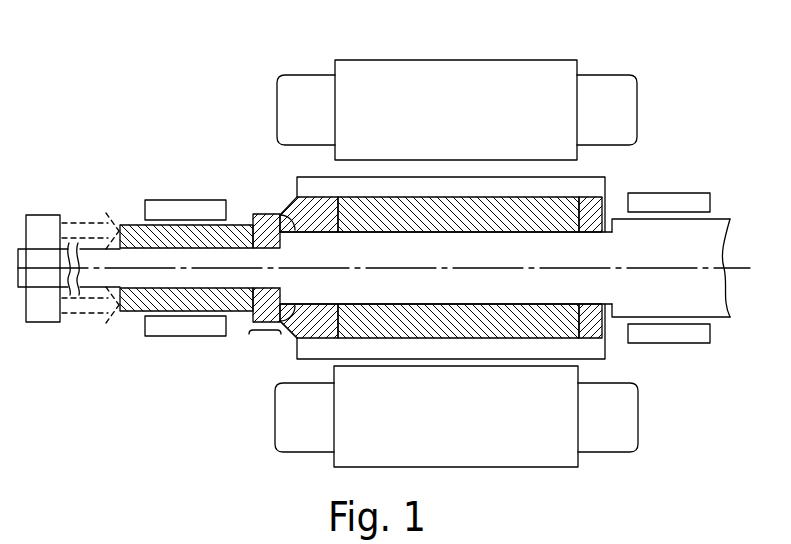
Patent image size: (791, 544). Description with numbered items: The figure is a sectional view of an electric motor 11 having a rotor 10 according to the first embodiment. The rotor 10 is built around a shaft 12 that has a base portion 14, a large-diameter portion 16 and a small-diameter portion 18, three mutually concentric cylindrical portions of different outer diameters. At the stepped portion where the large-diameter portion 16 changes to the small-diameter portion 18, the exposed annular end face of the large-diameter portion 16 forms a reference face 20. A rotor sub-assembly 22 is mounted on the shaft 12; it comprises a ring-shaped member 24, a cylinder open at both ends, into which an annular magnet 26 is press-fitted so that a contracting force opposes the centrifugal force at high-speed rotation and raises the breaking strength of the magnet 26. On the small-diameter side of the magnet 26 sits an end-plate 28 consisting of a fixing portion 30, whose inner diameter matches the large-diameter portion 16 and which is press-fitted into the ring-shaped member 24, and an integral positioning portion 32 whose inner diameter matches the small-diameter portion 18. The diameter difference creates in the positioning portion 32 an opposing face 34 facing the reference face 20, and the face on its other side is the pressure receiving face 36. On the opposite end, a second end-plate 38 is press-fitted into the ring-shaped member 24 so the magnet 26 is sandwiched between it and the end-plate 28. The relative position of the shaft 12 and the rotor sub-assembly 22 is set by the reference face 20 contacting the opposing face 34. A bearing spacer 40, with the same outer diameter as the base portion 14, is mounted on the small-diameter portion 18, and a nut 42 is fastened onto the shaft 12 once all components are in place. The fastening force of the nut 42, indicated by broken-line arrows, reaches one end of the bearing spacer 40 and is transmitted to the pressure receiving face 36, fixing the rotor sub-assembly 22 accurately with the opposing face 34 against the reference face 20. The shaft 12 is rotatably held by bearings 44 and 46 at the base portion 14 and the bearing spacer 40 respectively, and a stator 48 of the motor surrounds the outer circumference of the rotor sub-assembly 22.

The rotor 10 is at (152, 115).
The electric motor 11 is at (175, 60).
The shaft 12 is at (293, 223).
The base portion 14 is at (618, 225).
The large-diameter portion 16 is at (588, 242).
The small-diameter portion 18 is at (95, 256).
The reference face 20 is at (278, 240).
The rotor sub-assembly 22 is at (288, 172).
The ring-shaped member 24 is at (372, 184).
The magnet 26 is at (492, 203).
The end-plate 28 is at (199, 345).
The fixing portion 30 is at (292, 343).
The positioning portion 32 is at (260, 334).
The opposing face 34 is at (249, 332).
The pressure receiving face 36 is at (250, 318).
The second end-plate 38 is at (603, 326).
The bearing spacer 40 is at (126, 312).
The nut 42 is at (43, 311).
The bearing 44 is at (695, 343).
The bearing 46 is at (148, 337).
The stator 48 is at (290, 118).